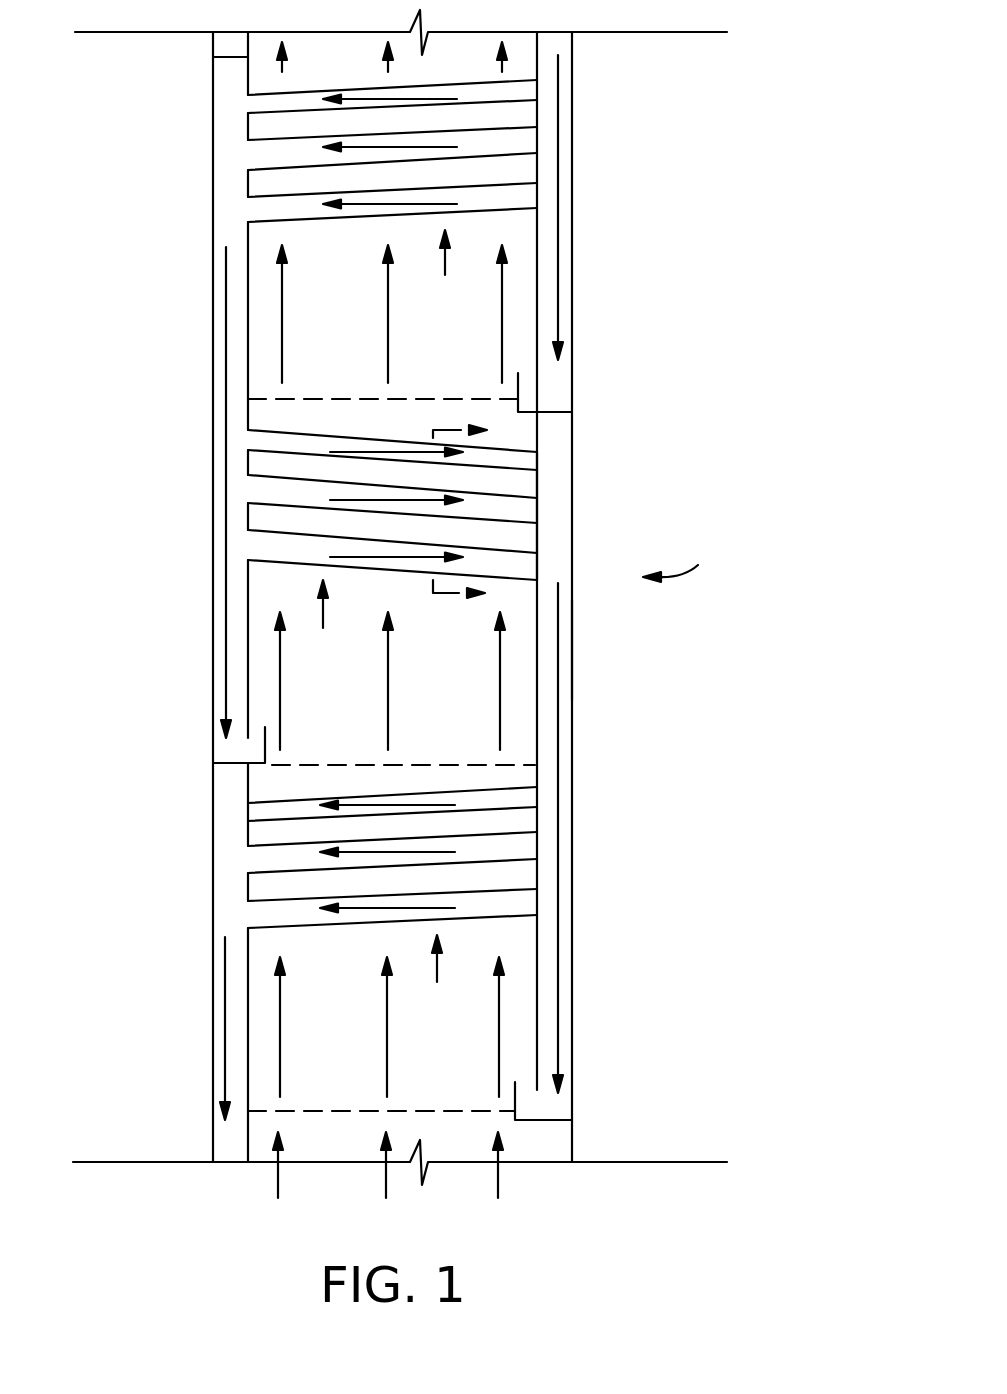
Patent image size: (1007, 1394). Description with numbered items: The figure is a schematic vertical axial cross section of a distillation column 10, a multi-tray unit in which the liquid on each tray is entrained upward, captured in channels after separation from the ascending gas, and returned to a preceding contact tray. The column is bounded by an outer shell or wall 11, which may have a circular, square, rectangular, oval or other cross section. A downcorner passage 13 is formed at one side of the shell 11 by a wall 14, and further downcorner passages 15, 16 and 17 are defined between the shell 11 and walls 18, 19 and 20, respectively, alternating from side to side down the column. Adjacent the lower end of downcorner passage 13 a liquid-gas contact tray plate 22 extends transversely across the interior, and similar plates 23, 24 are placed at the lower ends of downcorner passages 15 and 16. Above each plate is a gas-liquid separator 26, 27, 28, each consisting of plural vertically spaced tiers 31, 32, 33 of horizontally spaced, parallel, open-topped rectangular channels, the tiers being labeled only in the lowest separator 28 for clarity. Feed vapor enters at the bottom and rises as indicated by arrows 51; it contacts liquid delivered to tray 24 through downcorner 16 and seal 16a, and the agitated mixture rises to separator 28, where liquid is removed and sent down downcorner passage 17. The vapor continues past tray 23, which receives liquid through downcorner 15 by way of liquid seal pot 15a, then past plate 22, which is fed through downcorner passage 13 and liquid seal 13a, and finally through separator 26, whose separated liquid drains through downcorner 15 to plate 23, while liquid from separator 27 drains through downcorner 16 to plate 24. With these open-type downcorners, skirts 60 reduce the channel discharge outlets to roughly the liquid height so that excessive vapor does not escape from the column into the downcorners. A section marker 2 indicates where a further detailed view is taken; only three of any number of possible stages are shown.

The section line of FIG. 2 is at (469, 513).
The distillation column 10 is at (687, 554).
The outer shell 11 is at (573, 640).
The downcorner passage 13 is at (573, 242).
The liquid seal 13a is at (548, 397).
The wall 14 is at (540, 220).
The downcorner passage 15 is at (213, 395).
The liquid seal pot 15a is at (233, 752).
The downcorner passage 16 is at (572, 528).
The liquid seal 16a is at (538, 1108).
The downcorner passage 17 is at (213, 842).
The wall 18 is at (248, 293).
The wall 19 is at (537, 742).
The wall 20 is at (247, 990).
The liquid-gas contact tray plate 22 is at (317, 397).
The tray plate 23 is at (535, 807).
The tray plate 24 is at (448, 1110).
The gas-liquid separator 26 is at (446, 274).
The gas-liquid separator 27 is at (325, 623).
The gas-liquid separator 28 is at (436, 980).
The tier of channels 31 is at (490, 787).
The tier of channels 32 is at (483, 833).
The tier of channels 33 is at (460, 890).
The arrows indicating feed vapor flow 51 is at (385, 1177).
The skirts 60 is at (538, 510).